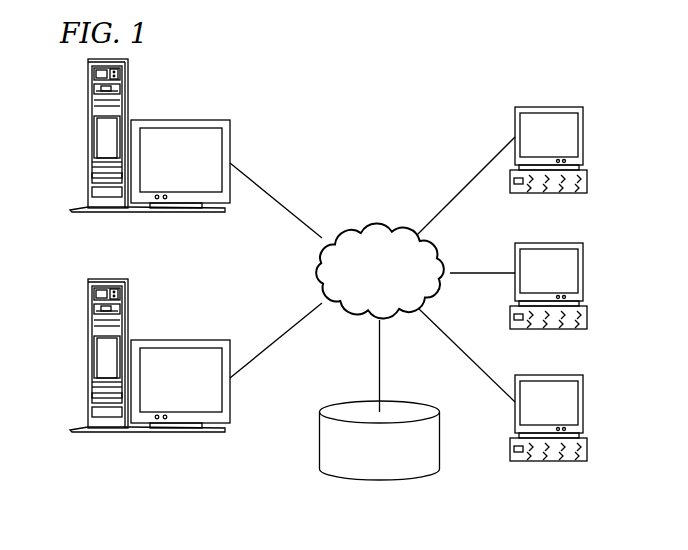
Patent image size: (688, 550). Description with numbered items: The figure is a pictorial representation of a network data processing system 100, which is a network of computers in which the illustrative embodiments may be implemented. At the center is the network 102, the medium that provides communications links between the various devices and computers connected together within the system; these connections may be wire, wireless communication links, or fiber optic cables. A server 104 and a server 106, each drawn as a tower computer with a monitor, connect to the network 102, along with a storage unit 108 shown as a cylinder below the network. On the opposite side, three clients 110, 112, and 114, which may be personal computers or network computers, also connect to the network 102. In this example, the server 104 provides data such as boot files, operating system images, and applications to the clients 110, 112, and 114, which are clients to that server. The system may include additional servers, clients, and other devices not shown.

The network data processing system 100 is at (430, 114).
The network 102 is at (352, 225).
The server 104 is at (88, 357).
The server 106 is at (88, 137).
The storage unit 108 is at (363, 481).
The client 110 is at (583, 137).
The client 112 is at (583, 273).
The client 114 is at (583, 405).